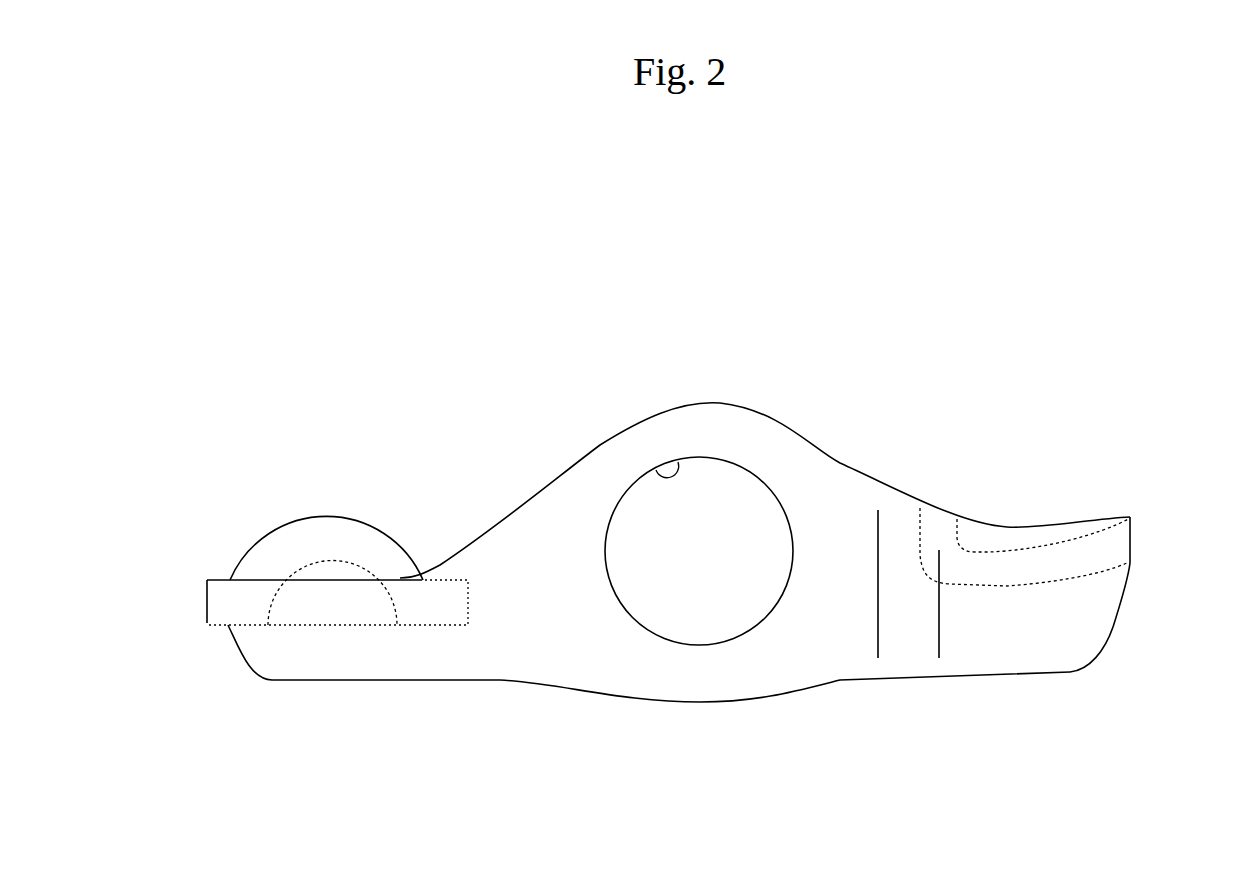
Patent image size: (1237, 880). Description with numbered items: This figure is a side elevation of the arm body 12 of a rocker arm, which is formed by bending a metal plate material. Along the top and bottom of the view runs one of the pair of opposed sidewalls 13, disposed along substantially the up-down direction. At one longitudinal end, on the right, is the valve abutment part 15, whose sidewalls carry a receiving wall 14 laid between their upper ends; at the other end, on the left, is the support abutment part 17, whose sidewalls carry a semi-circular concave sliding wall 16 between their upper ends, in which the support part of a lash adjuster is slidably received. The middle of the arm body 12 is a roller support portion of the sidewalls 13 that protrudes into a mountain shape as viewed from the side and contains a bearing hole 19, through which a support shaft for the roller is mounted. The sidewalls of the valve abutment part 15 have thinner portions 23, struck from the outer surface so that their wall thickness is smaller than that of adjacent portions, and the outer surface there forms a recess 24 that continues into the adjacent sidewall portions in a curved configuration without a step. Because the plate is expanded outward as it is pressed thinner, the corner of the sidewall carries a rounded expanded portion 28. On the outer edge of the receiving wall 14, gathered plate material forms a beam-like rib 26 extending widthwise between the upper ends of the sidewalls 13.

The arm body 12 is at (768, 417).
The sidewalls 13 is at (303, 673).
The receiving wall 14 is at (1038, 547).
The valve abutment part 15 is at (1130, 517).
The sliding wall 16 is at (322, 524).
The support abutment part 17 is at (217, 578).
The bearing holes 19 is at (655, 468).
The thinner portions 23 is at (1113, 627).
The recess 24 is at (1005, 642).
The rib 26 is at (974, 533).
The expanded portion 28 is at (1093, 663).